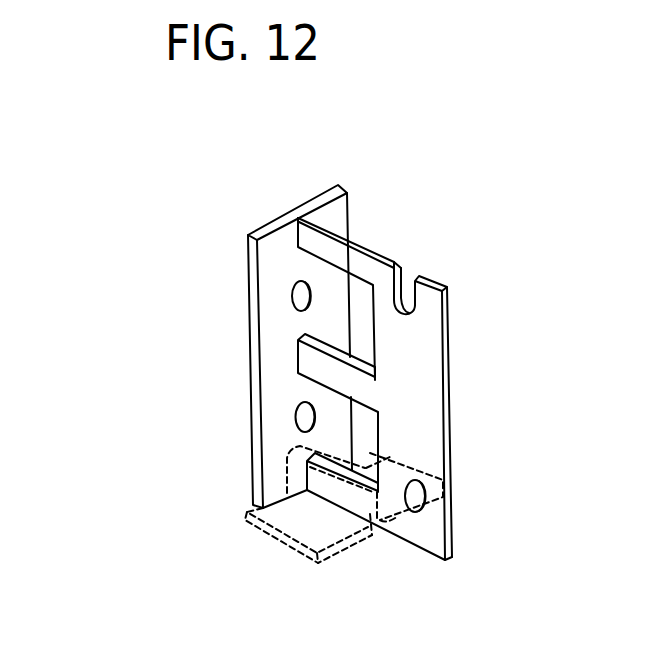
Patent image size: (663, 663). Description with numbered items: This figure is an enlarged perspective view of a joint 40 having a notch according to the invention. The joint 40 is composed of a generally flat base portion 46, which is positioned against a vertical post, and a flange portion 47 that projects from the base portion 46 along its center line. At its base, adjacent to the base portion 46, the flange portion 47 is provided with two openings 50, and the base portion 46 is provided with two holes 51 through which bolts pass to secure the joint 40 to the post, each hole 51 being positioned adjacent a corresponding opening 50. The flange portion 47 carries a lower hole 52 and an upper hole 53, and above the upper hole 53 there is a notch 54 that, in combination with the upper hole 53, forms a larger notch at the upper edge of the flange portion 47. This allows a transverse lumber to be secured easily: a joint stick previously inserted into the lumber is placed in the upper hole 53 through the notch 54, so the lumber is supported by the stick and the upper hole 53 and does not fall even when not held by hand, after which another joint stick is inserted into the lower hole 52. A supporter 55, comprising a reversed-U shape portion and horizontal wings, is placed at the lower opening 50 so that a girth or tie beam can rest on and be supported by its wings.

The joint 40 is at (206, 422).
The base portion 46 is at (273, 225).
The flange portion 47 is at (380, 245).
The opening 50 is at (360, 298).
The hole 51 is at (292, 296).
The lower hole 52 is at (420, 496).
The upper hole 53 is at (413, 312).
The notch 54 is at (404, 290).
The supporter 55 is at (308, 536).